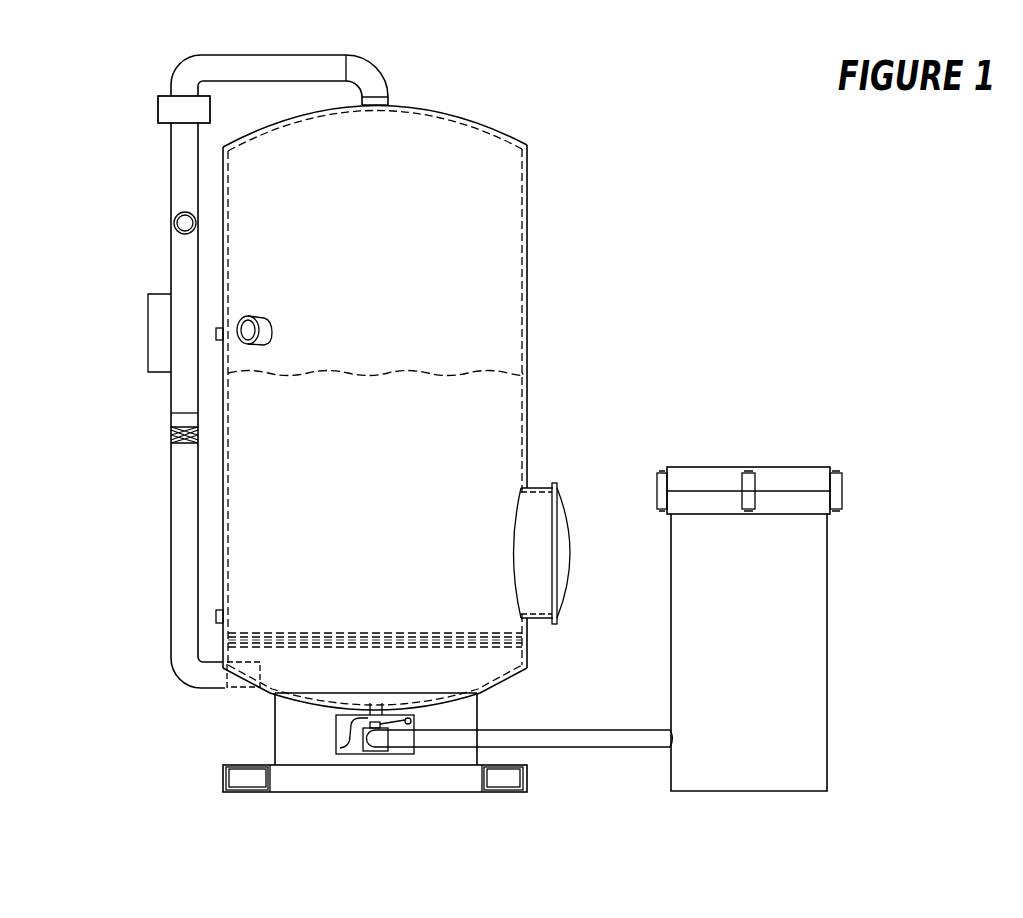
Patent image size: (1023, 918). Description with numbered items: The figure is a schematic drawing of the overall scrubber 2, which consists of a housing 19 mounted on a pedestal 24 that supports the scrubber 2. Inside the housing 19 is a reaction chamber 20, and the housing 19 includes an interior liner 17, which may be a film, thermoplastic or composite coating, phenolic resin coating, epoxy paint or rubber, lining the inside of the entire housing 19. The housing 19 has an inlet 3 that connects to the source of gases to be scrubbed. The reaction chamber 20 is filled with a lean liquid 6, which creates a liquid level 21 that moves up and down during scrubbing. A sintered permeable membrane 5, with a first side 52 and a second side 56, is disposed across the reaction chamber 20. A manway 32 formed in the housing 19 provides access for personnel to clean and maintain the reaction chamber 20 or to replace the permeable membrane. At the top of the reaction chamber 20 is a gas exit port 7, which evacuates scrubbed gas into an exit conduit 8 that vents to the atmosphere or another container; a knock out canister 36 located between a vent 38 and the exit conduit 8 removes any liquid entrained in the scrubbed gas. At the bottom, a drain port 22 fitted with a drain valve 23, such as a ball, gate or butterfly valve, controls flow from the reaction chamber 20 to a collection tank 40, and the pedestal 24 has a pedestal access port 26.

The scrubber 2 is at (633, 93).
The inlet 3 is at (222, 677).
The sintered permeable membrane 5 is at (508, 640).
The lean liquid 6 is at (425, 440).
The gas exit port 7 is at (377, 102).
The exit conduit 8 is at (287, 58).
The interior liner 17 is at (488, 128).
The housing 19 is at (527, 290).
The reaction chamber 20 is at (425, 278).
The liquid level 21 is at (408, 372).
The drain port 22 is at (340, 748).
The drain valve 23 is at (365, 749).
The pedestal 24 is at (273, 728).
The pedestal access port 26 is at (383, 748).
The manway 32 is at (543, 520).
The knock out canister 36 is at (183, 110).
The vent 38 is at (155, 335).
The collection tank 40 is at (828, 652).
The first side 52 is at (381, 647).
The second side 56 is at (380, 636).